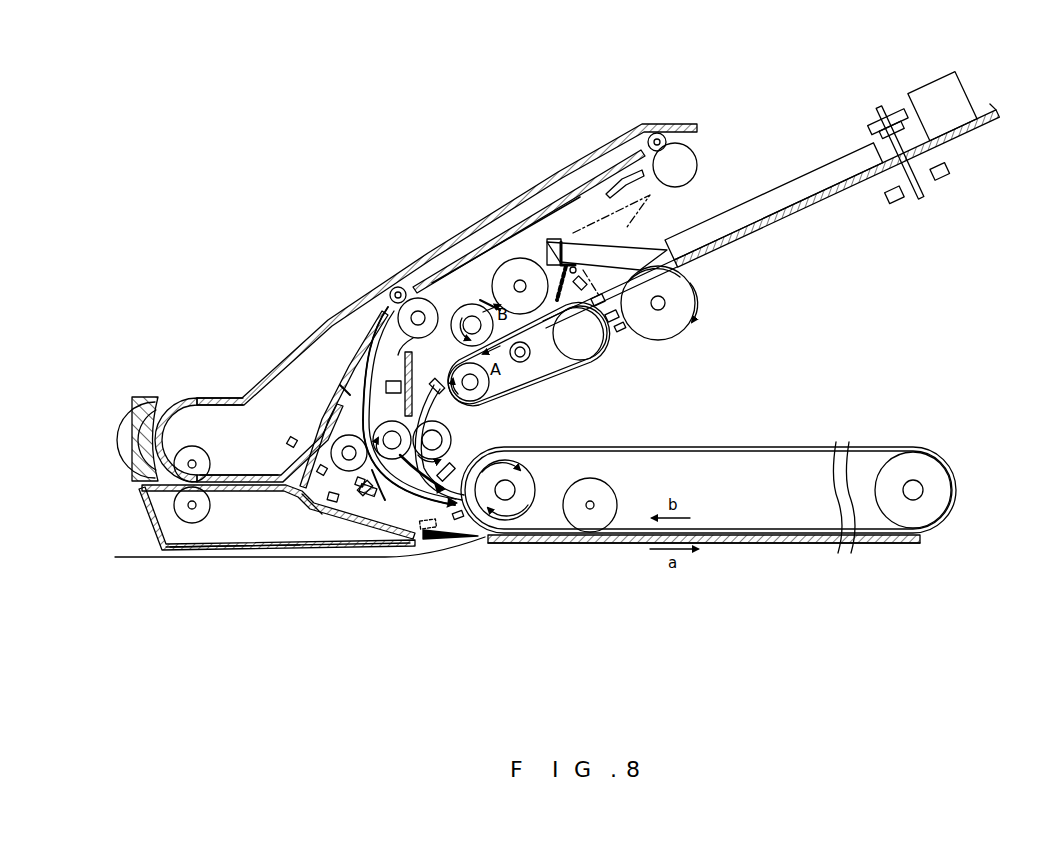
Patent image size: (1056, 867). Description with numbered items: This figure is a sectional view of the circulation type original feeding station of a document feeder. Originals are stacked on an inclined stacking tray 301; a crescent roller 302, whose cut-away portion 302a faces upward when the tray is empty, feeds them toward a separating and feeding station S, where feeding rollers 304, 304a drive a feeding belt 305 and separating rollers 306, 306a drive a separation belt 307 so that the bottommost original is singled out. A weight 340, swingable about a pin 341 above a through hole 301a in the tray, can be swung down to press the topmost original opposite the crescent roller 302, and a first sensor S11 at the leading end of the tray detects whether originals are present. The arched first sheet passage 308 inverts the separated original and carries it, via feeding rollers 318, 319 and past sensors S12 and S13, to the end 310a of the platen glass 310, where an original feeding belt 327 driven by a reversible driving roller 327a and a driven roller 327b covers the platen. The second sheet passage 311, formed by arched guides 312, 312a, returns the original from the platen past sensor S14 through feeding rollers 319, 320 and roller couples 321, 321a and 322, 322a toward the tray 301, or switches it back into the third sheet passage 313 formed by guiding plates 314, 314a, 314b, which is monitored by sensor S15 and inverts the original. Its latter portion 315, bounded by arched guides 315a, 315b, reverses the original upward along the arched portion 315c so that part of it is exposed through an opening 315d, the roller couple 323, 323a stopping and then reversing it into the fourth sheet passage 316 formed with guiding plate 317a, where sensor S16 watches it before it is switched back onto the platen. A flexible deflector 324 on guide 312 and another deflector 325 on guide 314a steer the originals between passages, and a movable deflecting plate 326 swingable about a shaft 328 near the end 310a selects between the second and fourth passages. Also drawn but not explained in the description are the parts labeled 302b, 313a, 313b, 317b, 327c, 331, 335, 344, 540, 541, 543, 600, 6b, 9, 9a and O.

The stacking tray 301 is at (834, 183).
The through hole 301a is at (695, 265).
The crescent roller 302 is at (700, 313).
The cut-away portion 302a is at (663, 310).
The roller surface 302b is at (690, 290).
The feeding roller 304 is at (487, 390).
The feeding roller 304a is at (612, 362).
The feeding belt 305 is at (562, 375).
The separating roller 306 is at (470, 303).
The separating roller 306a is at (522, 280).
The separation belt 307 is at (470, 295).
The first sheet passage 308 is at (445, 400).
The platen glass 310 is at (628, 547).
The end of the platen glass 310a is at (557, 553).
The second sheet passage 311 is at (362, 368).
The arched guide 312 is at (466, 300).
The arched guide 312a is at (405, 500).
The third sheet passage 313 is at (330, 410).
The upper guide plate 313a is at (600, 205).
The lower guide plate 313b is at (277, 478).
The guiding plate 314 is at (298, 487).
The guiding plate 314a is at (297, 512).
The guiding plate 314b is at (215, 548).
The latter portion of the third passage 315 is at (166, 400).
The arched guide 315a is at (158, 403).
The arched guide 315b is at (190, 405).
The arched portion 315c is at (152, 438).
The opening 315d is at (205, 400).
The fourth sheet passage 316 is at (262, 560).
The guiding plate 317a is at (345, 472).
The guide piece 317b is at (360, 497).
The feeding roller 318 is at (396, 465).
The feeding roller 319 is at (378, 502).
The feeding roller 320 is at (338, 505).
The feeding roller 321 is at (414, 297).
The feeding roller 321a is at (398, 286).
The feeding roller 322 is at (695, 160).
The feeding roller 322a is at (664, 135).
The feeding roller 323 is at (170, 507).
The feeding roller 323a is at (172, 463).
The deflector 324 is at (452, 508).
The deflector 325 is at (345, 385).
The movable deflecting plate 326 is at (462, 505).
The original feeding belt 327 is at (760, 450).
The driving roller 327a is at (522, 533).
The driven roller 327b is at (945, 488).
The belt lower run 327c is at (775, 545).
The shaft 328 is at (432, 530).
The roller 331 is at (590, 520).
The block 335 is at (140, 424).
The weight 340 is at (640, 262).
The pin 341 is at (592, 195).
The bracket 344 is at (555, 238).
The guide piece 540 is at (895, 195).
The box 541 is at (942, 106).
The guide piece 543 is at (940, 172).
The guide 600 is at (398, 320).
The sheet 6b is at (490, 292).
The sheet guide 9 is at (366, 400).
The sheet guide 9a is at (362, 380).
The roller axis O is at (525, 512).
The separating and feeding station S is at (457, 290).
The first sensor S11 is at (620, 330).
The second sensor S12 is at (385, 383).
The third sensor S13 is at (460, 520).
The fourth sensor S14 is at (380, 492).
The fifth sensor S15 is at (292, 438).
The sixth sensor S16 is at (322, 478).